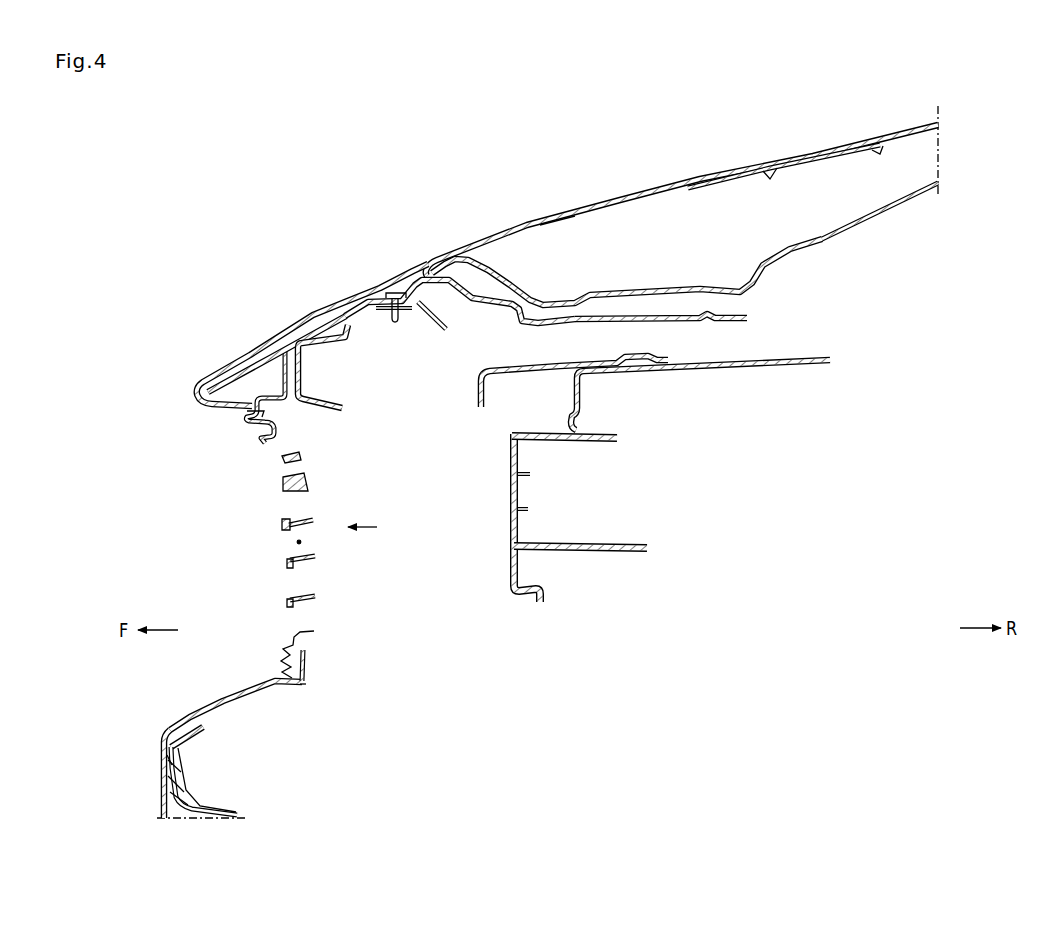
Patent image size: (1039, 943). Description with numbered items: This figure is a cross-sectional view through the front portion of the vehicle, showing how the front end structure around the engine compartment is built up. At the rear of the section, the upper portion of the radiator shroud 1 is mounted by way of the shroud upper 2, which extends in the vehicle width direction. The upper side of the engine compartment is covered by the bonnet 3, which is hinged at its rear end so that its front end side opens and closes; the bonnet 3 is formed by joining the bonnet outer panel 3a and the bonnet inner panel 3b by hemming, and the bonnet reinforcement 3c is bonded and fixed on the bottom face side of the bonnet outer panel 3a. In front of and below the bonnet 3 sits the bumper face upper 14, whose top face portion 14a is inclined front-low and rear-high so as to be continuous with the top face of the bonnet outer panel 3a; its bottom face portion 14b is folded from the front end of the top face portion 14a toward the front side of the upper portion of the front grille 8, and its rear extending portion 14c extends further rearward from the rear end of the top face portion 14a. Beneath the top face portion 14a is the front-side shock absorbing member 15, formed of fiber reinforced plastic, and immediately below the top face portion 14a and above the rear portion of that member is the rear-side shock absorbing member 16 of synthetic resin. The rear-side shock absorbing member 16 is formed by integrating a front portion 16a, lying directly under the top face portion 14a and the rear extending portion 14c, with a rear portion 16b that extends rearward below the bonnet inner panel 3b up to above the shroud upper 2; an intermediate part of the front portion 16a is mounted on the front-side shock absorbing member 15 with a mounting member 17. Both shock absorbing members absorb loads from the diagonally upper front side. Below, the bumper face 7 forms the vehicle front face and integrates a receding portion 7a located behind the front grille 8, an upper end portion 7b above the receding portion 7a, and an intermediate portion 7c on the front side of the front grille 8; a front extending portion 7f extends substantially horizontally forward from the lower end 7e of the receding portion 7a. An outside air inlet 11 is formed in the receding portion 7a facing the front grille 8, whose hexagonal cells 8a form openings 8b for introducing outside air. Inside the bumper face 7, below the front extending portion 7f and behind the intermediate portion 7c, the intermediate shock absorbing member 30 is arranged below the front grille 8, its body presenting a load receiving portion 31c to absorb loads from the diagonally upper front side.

The radiator shroud 1 is at (506, 494).
The shroud upper 2 is at (555, 366).
The bonnet 3 is at (527, 222).
The bonnet outer panel 3a is at (553, 225).
The bonnet inner panel 3b is at (833, 235).
The bonnet reinforcement 3c is at (713, 181).
The bumper face 7 is at (229, 724).
The receding portion 7a is at (307, 663).
The upper end portion 7b is at (303, 363).
The intermediate portion 7c is at (160, 780).
The lower end 7e is at (305, 686).
The front extending portion 7f is at (220, 699).
The front grille 8 is at (283, 524).
The cells 8a is at (313, 598).
The openings 8b is at (297, 542).
The outside air inlet 11 is at (374, 526).
The bumper face upper 14 is at (498, 338).
The top face portion 14a is at (243, 357).
The bottom face portion 14b is at (226, 405).
The rear extending portion 14c is at (487, 300).
The front-side shock absorbing member 15 is at (310, 314).
The rear-side shock absorbing member 16 is at (368, 290).
The front portion 16a is at (465, 301).
The rear portion 16b is at (643, 313).
The mounting member 17 is at (395, 323).
The intermediate shock absorbing member 30 is at (225, 799).
The load receiving portion 31c is at (163, 764).